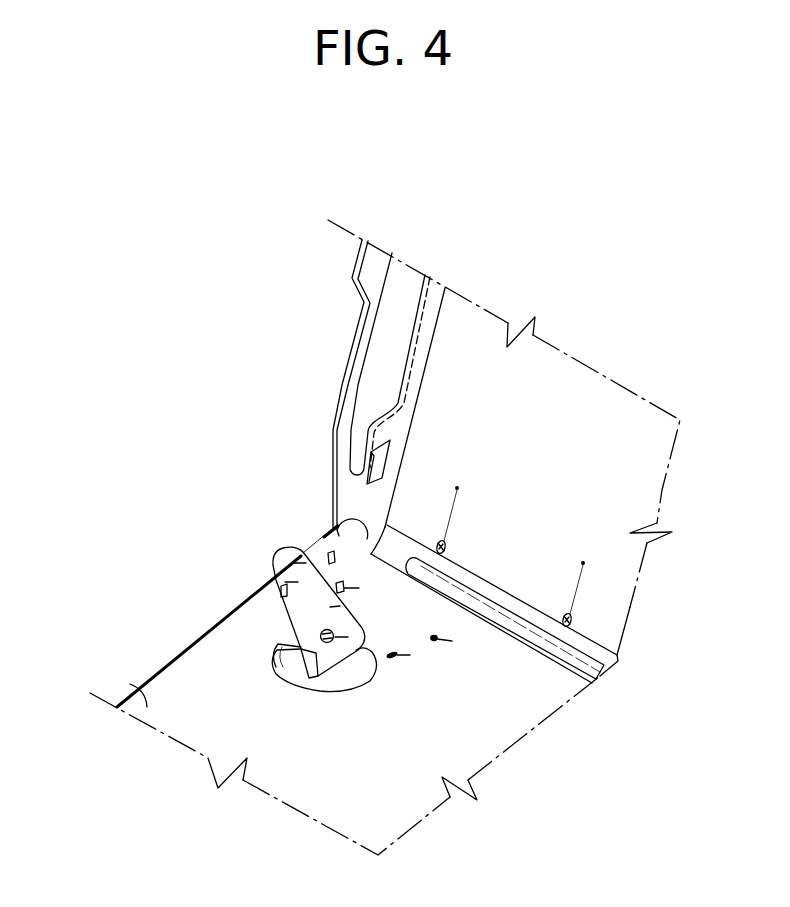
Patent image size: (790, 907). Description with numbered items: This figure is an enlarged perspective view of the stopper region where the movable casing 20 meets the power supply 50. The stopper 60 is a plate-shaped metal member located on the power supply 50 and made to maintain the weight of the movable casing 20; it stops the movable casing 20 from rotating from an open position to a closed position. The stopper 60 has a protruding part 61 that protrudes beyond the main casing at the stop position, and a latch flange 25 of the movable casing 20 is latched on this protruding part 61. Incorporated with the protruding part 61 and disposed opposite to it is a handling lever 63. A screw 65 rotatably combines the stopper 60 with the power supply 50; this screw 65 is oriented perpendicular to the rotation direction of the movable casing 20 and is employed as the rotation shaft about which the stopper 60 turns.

The movable casing 20 is at (632, 607).
The latch flange 25 is at (341, 463).
The power supply 50 is at (136, 688).
The stopper 60 is at (229, 500).
The protruding part 61 is at (280, 553).
The handling lever 63 is at (276, 653).
The screw 65 is at (320, 636).